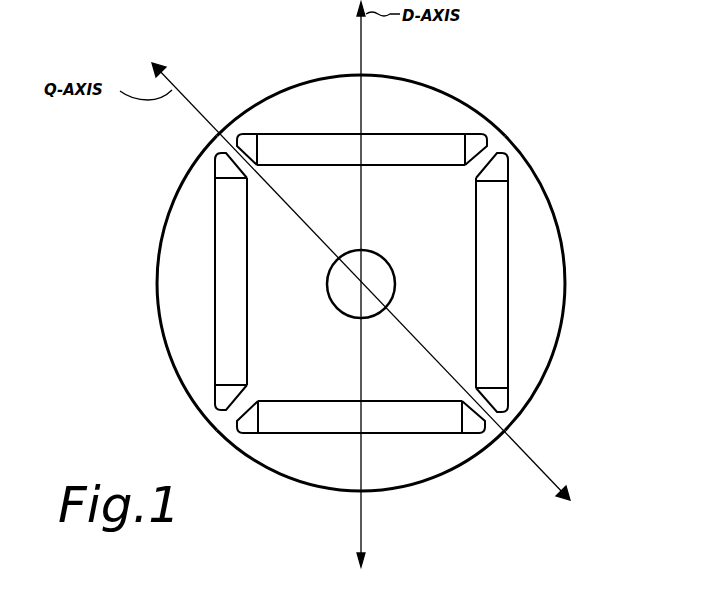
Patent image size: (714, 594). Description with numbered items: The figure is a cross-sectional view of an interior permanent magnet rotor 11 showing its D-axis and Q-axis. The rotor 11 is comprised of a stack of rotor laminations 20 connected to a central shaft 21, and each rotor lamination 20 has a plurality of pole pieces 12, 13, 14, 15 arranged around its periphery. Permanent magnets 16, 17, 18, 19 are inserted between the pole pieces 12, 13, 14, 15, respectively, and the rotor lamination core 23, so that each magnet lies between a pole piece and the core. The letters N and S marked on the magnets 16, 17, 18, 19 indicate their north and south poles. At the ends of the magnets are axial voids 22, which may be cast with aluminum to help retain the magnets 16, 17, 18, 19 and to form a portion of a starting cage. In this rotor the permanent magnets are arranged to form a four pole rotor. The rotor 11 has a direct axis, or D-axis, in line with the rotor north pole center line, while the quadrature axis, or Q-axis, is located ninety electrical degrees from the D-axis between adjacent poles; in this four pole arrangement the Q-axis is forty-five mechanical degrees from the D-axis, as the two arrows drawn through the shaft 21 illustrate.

The rotor 11 is at (78, 289).
The pole piece 12 is at (312, 86).
The pole piece 13 is at (556, 222).
The pole piece 14 is at (405, 484).
The pole piece 15 is at (168, 215).
The permanent magnet 16 is at (418, 166).
The permanent magnet 17 is at (478, 332).
The permanent magnet 18 is at (396, 401).
The permanent magnet 19 is at (247, 237).
The rotor lamination 20 is at (302, 347).
The shaft 21 is at (394, 272).
The axial void 22 is at (250, 140).
The rotor lamination core 23 is at (463, 343).